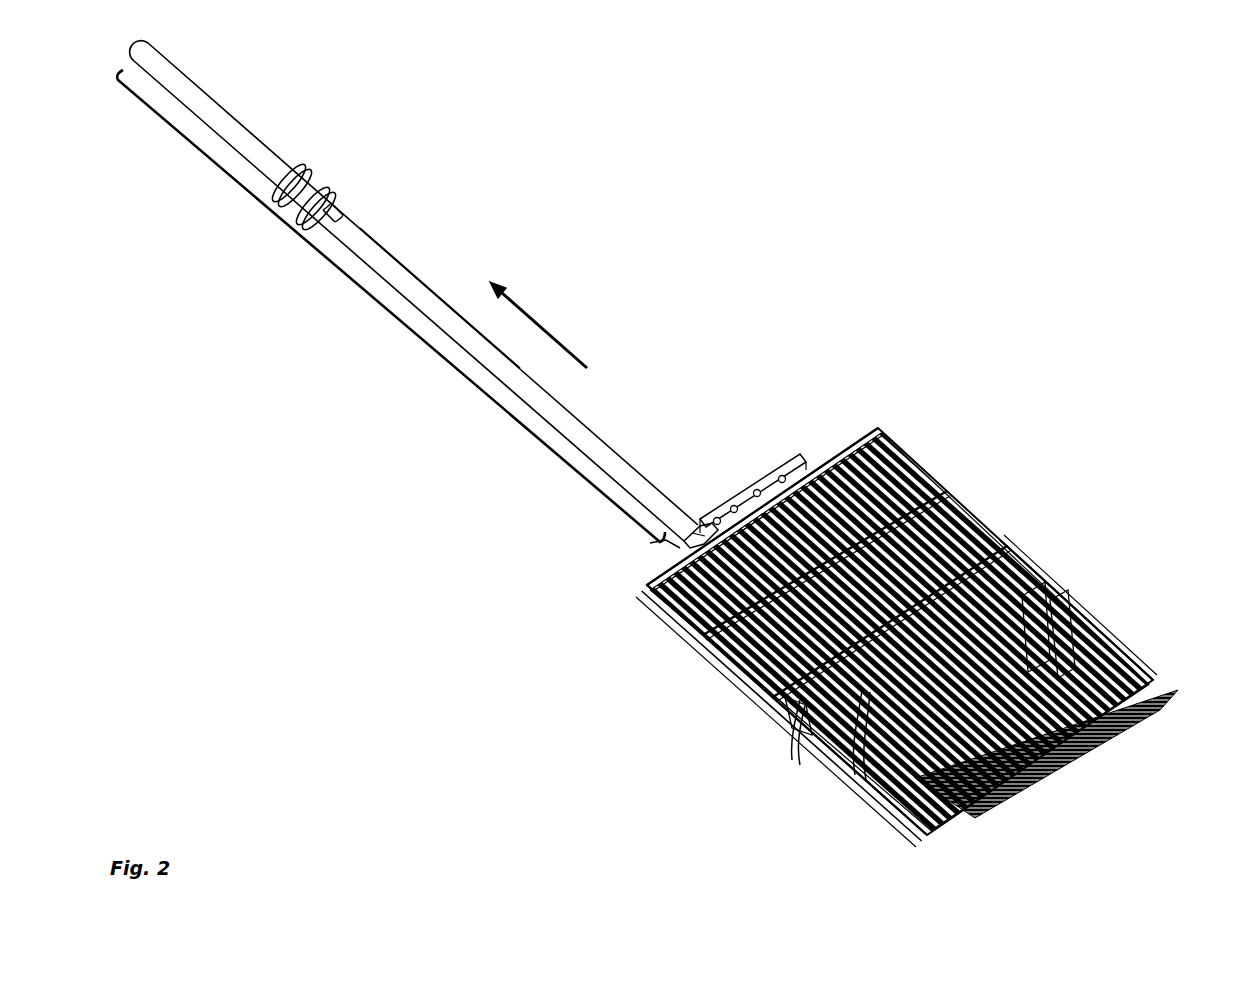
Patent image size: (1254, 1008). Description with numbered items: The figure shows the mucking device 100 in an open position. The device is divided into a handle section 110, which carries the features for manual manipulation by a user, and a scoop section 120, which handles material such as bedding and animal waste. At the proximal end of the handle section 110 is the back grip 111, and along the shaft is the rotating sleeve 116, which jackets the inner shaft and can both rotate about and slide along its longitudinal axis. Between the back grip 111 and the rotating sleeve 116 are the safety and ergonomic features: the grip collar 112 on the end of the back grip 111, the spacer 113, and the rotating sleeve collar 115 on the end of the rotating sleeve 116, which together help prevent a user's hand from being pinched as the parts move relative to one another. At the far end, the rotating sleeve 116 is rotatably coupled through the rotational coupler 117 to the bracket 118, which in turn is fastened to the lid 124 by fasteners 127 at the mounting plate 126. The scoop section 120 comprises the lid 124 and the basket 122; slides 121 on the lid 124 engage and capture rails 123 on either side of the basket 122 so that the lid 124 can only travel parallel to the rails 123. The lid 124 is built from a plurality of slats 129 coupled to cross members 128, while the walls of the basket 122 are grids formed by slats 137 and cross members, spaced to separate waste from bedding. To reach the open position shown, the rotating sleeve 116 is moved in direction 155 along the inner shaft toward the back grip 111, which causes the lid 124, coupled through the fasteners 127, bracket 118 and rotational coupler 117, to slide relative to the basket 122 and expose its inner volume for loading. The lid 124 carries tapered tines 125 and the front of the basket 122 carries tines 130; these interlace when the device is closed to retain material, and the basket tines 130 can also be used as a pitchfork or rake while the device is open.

The mucking device 100 is at (473, 80).
The handle section 110 is at (407, 291).
The back grip 111 is at (205, 112).
The grip collar 112 is at (299, 168).
The spacer 113 is at (307, 194).
The rotating sleeve collar 115 is at (328, 205).
The rotating sleeve 116 is at (398, 263).
The rotational coupler 117 is at (698, 524).
The bracket 118 is at (683, 545).
The scoop section 120 is at (867, 417).
The slides 121 is at (687, 637).
The basket 122 is at (1060, 677).
The rails 123 is at (1113, 652).
The lid 124 is at (647, 587).
The tines 125 is at (875, 695).
The mounting plate 126 is at (790, 472).
The fasteners 127 is at (717, 516).
The cross members 128 is at (767, 687).
The slats 129 is at (806, 710).
The tines 130 is at (1030, 790).
The slats 137 is at (1040, 655).
The direction 155 is at (538, 325).